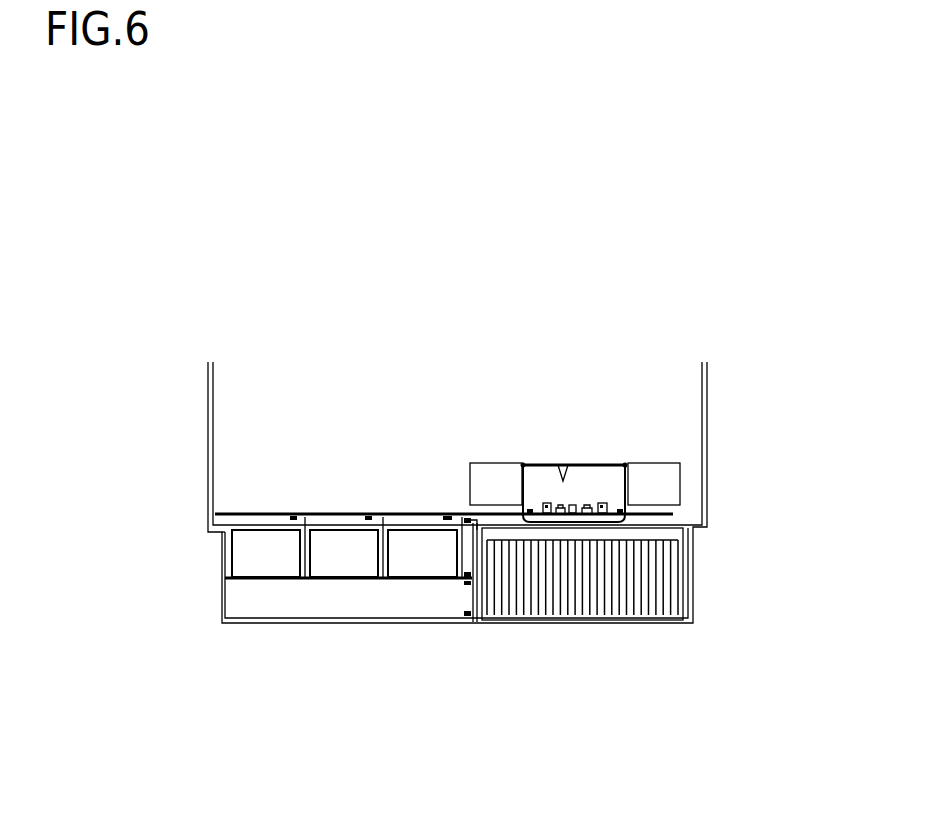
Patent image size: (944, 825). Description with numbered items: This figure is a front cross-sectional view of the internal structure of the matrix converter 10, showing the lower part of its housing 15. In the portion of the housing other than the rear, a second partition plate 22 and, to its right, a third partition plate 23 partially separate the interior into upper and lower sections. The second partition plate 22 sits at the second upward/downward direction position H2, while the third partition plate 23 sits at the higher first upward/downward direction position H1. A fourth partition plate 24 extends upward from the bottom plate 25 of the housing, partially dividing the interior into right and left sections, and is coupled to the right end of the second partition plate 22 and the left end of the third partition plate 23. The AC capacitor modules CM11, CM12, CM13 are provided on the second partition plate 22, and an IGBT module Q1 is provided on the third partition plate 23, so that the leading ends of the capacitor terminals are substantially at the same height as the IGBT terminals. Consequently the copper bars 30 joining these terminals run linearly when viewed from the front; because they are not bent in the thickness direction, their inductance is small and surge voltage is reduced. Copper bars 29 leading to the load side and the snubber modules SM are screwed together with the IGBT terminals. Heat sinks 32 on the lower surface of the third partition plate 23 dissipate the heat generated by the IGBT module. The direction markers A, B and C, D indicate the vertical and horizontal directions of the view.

The matrix converter 10 is at (193, 237).
The housing 15 is at (210, 460).
The second partition plate 22 is at (232, 583).
The third partition plate 23 is at (683, 522).
The fourth partition plate 24 is at (475, 538).
The bottom plate 25 is at (518, 622).
The copper bars 29 is at (668, 492).
The copper bars 30 is at (322, 513).
The heat sinks 32 is at (678, 585).
The AC capacitor module CM11 is at (278, 560).
The AC capacitor module CM12 is at (352, 560).
The AC capacitor module CM13 is at (410, 560).
The snubber module SM is at (492, 472).
The IGBT module Q1 is at (563, 465).
The first upward/downward direction position H1 is at (714, 525).
The second upward/downward direction position H2 is at (214, 578).
The direction A is at (837, 553).
The direction B is at (842, 541).
The direction C is at (633, 757).
The direction D is at (621, 752).